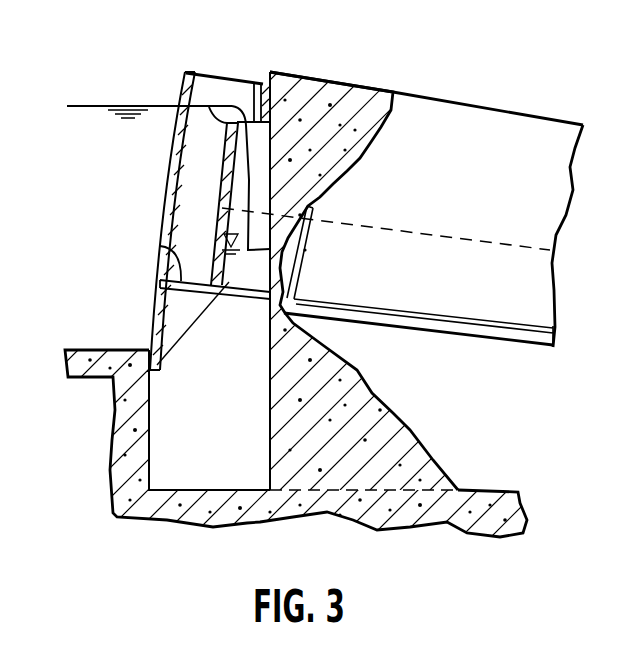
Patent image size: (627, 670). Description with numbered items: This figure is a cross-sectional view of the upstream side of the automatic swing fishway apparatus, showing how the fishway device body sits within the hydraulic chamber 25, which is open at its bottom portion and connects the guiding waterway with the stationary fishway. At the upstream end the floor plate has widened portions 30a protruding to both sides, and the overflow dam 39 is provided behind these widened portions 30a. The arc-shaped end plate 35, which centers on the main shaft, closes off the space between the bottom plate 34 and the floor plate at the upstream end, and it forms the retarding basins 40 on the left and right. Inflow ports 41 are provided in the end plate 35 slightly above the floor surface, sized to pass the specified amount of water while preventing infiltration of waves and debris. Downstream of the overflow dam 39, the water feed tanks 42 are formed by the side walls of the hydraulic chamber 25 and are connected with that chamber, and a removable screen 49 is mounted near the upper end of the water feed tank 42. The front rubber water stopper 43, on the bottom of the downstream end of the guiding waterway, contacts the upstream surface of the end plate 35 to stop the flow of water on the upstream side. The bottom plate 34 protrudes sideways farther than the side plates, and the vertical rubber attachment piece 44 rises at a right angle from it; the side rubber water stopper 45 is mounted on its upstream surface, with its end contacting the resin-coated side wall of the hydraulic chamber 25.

The hydraulic chamber 25 is at (532, 418).
The widened portion 30a is at (160, 246).
The bottom plate 34 is at (463, 316).
The end plate 35 is at (150, 298).
The overflow dam 39 is at (210, 106).
The retarding basin 40 is at (190, 140).
The inflow port 41 is at (165, 192).
The water feed tank 42 is at (240, 168).
The front rubber water stopper 43 is at (146, 346).
The vertical rubber attachment piece 44 is at (305, 259).
The side rubber water stopper 45 is at (460, 336).
The screen 49 is at (250, 97).